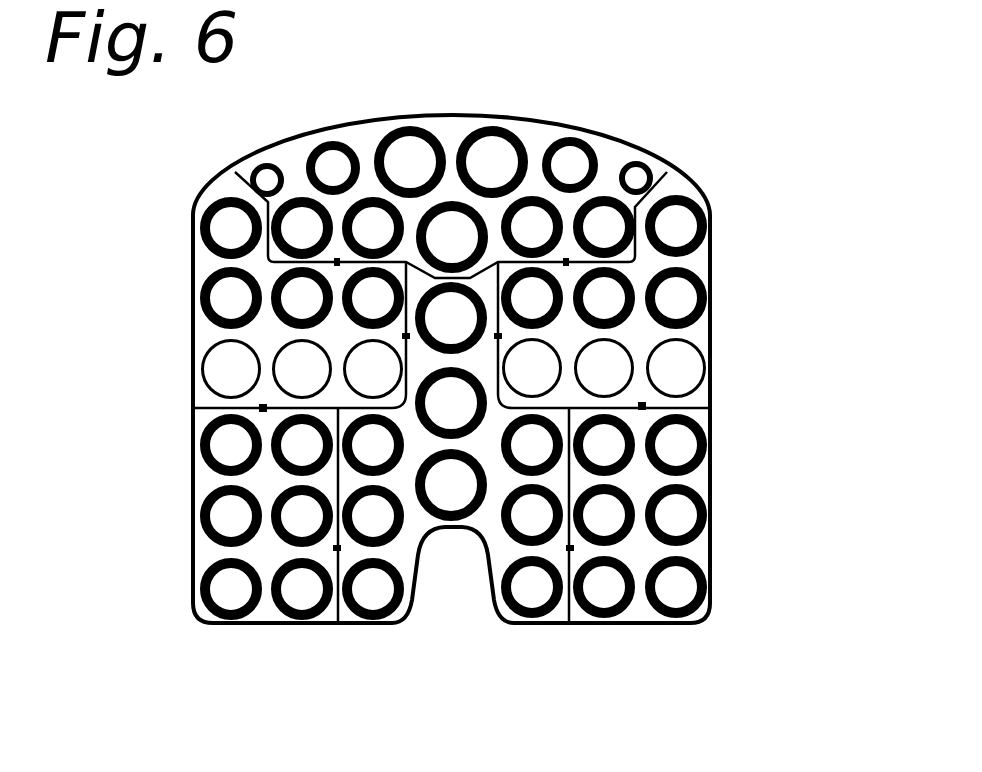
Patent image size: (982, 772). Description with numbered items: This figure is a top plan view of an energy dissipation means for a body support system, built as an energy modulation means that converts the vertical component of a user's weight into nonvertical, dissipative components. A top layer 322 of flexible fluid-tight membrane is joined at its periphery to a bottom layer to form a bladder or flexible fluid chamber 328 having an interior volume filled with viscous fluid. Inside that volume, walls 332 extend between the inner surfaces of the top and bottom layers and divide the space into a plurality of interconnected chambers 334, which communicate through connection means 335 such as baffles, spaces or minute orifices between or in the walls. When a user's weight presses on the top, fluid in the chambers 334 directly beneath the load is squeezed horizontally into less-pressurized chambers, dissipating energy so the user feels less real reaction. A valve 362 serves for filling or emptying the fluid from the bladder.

The top layer 322 is at (712, 479).
The flexible fluid chamber 328 is at (712, 335).
The walls 332 is at (710, 260).
The interconnected chambers 334 is at (365, 145).
The connection means 335 is at (642, 410).
The valve 362 is at (456, 113).